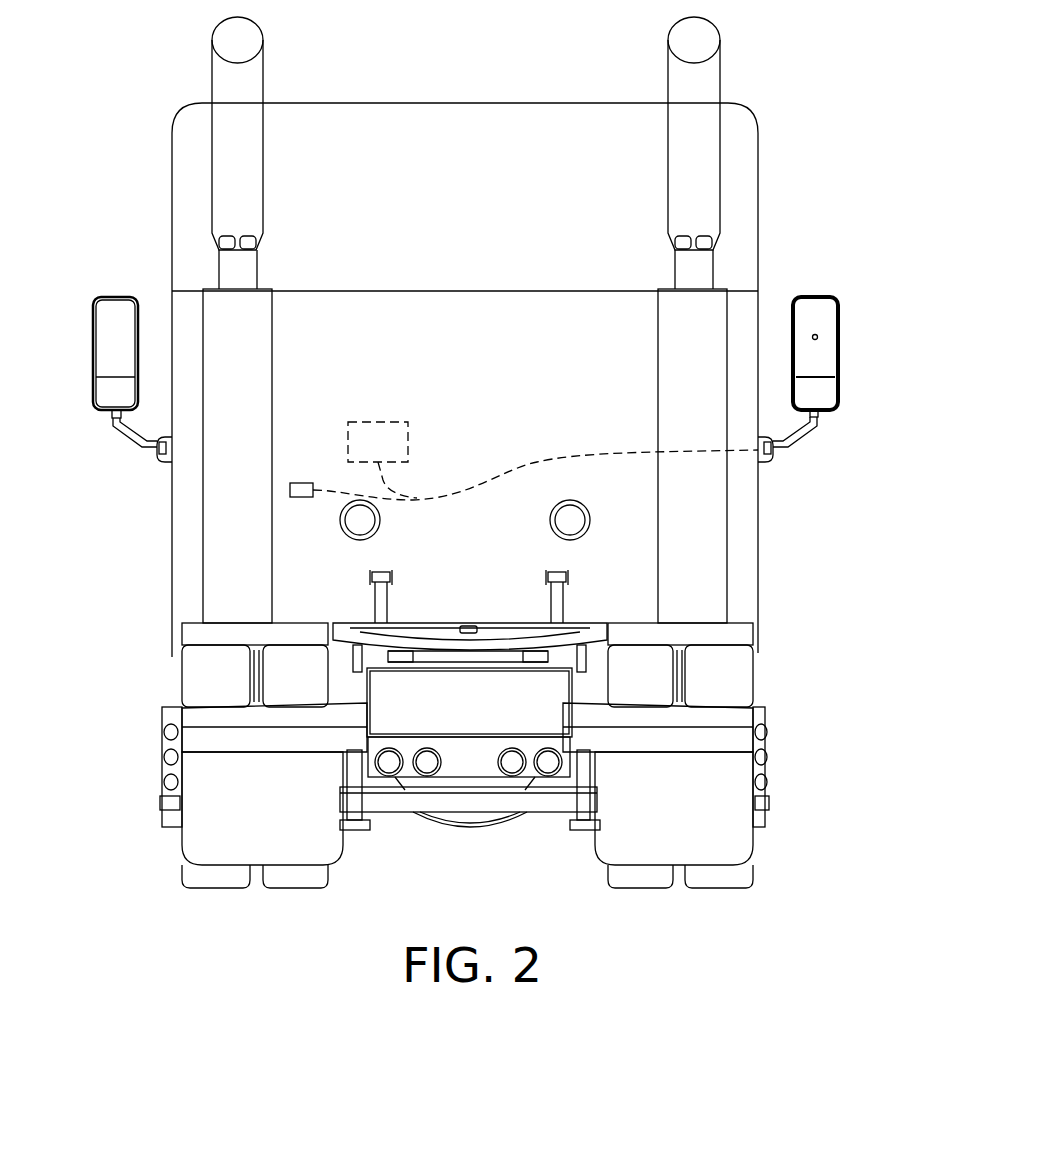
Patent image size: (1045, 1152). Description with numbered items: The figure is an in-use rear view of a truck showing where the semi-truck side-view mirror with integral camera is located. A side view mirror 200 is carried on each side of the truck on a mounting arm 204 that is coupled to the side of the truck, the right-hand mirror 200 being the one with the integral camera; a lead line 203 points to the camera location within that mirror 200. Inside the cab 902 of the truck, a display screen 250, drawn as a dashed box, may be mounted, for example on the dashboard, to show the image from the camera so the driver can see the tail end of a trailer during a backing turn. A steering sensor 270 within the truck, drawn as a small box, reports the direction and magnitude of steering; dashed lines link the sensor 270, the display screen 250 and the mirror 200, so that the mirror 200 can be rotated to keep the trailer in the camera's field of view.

The side view mirror 200 is at (855, 290).
The camera 203 is at (815, 337).
The mounting arm 204 is at (805, 440).
The display screen 250 is at (347, 444).
The steering sensor 270 is at (290, 490).
The cab 902 is at (752, 577).